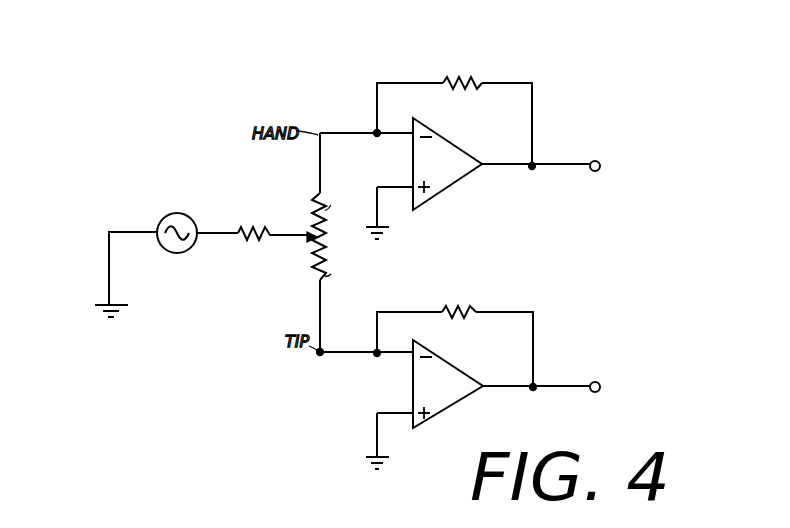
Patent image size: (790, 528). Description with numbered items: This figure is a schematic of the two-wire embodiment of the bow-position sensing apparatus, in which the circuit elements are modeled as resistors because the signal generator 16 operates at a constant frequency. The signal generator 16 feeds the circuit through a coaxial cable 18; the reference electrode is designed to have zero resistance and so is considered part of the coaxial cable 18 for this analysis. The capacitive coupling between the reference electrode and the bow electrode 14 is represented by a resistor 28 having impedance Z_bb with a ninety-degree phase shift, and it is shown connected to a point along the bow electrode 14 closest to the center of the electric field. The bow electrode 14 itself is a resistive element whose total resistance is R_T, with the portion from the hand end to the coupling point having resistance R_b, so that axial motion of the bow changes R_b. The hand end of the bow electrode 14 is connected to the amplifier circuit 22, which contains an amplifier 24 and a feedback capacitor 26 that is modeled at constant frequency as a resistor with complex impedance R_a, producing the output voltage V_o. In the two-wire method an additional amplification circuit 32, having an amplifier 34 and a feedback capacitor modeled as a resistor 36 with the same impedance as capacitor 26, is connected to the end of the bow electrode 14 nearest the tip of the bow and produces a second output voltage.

The bow electrode 14 is at (328, 239).
The signal generator 16 is at (164, 216).
The coaxial cable 18 is at (227, 232).
The resistor 28 is at (267, 229).
The amplifier circuit 22 is at (548, 91).
The amplifier 24 is at (450, 186).
The capacitor 26 is at (478, 83).
The additional amplification circuit 32 is at (547, 319).
The amplifier 34 is at (451, 405).
The resistor 36 is at (476, 313).